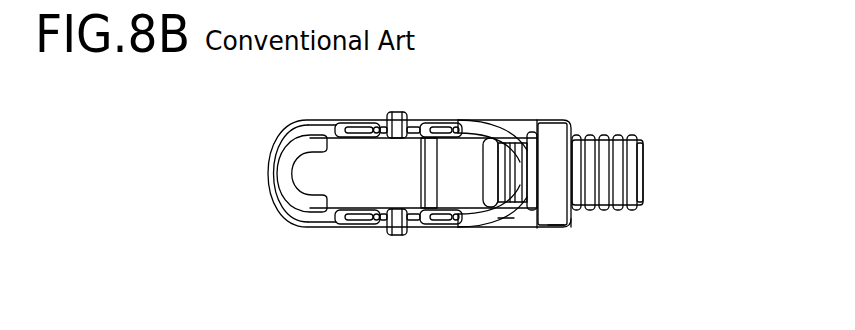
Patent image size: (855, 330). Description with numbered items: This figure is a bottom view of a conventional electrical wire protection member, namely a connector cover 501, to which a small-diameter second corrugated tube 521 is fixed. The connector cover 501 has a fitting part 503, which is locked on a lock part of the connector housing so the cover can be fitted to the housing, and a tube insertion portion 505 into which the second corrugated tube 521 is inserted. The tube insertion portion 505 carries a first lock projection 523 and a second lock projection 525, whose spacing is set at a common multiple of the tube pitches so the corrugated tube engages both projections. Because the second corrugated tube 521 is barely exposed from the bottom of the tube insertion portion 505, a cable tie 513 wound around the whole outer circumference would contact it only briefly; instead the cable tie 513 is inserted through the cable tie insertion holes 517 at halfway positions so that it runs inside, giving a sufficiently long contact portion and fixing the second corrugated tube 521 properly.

The connector cover 501 is at (268, 120).
The fitting part 503 is at (360, 120).
The tube insertion portion 505 is at (558, 112).
The cable tie 513 is at (556, 217).
The cable tie insertion holes 517 is at (535, 112).
The second corrugated tube 521 is at (640, 207).
The first lock projection 523 is at (575, 213).
The second lock projection 525 is at (506, 218).